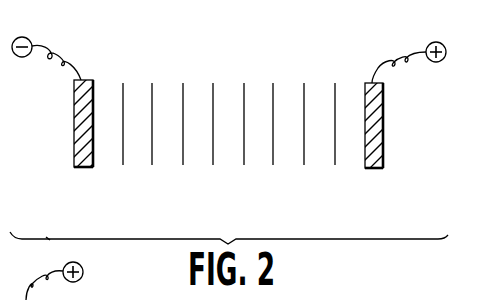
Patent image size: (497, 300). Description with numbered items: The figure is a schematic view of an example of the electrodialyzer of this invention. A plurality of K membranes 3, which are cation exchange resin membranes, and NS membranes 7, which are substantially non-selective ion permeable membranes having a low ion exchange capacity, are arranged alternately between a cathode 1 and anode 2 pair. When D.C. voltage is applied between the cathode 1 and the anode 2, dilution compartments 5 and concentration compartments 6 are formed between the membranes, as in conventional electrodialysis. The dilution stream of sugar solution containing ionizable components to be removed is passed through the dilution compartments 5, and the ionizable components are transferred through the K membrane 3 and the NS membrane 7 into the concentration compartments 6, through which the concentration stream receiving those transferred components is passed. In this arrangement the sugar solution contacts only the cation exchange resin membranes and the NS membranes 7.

The cathode 1 is at (74, 130).
The anode 2 is at (384, 138).
The K membrane 3 is at (213, 112).
The dilution compartment 5 is at (316, 163).
The concentration compartment 6 is at (293, 90).
The NS membrane 7 is at (243, 112).